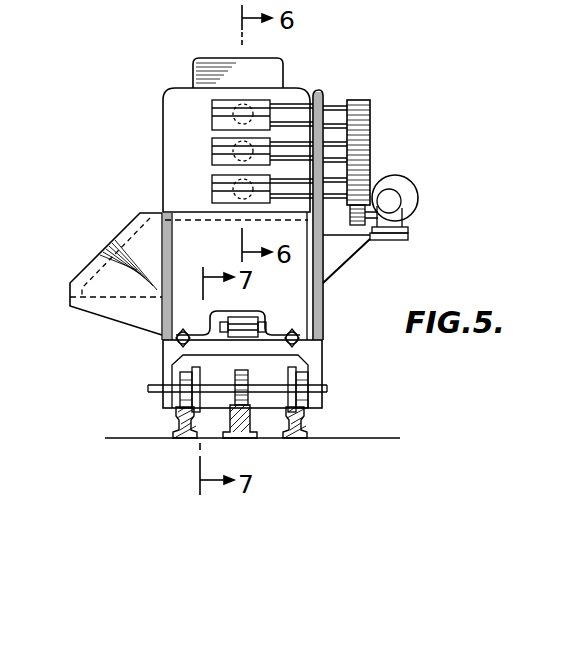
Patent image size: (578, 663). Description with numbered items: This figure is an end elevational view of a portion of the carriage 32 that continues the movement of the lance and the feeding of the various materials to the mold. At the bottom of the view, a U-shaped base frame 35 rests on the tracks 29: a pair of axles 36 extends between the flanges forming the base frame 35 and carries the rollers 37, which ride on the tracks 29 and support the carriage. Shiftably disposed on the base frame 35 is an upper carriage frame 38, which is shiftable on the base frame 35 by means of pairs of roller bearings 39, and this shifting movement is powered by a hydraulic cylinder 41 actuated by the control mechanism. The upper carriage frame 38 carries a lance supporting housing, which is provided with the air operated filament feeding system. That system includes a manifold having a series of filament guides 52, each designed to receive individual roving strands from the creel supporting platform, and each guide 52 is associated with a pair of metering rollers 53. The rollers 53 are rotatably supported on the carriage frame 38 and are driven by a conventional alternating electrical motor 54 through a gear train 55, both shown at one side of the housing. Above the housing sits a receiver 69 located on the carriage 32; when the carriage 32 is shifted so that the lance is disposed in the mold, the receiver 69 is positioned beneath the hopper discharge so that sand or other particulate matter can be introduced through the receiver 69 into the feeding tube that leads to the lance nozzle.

The receiver 69 is at (195, 70).
The filament guide 52 is at (212, 96).
The metering rollers 53 is at (212, 123).
The gear train 55 is at (370, 138).
The alternating electrical motor 54 is at (418, 191).
The upper carriage frame 38 is at (116, 240).
The carriage 32 is at (323, 297).
The hydraulic cylinder 41 is at (223, 333).
The roller bearings 39 is at (300, 333).
The U-shaped base frame 35 is at (172, 359).
The axles 36 is at (263, 380).
The rollers 37 is at (160, 378).
The tracks 29 is at (300, 427).